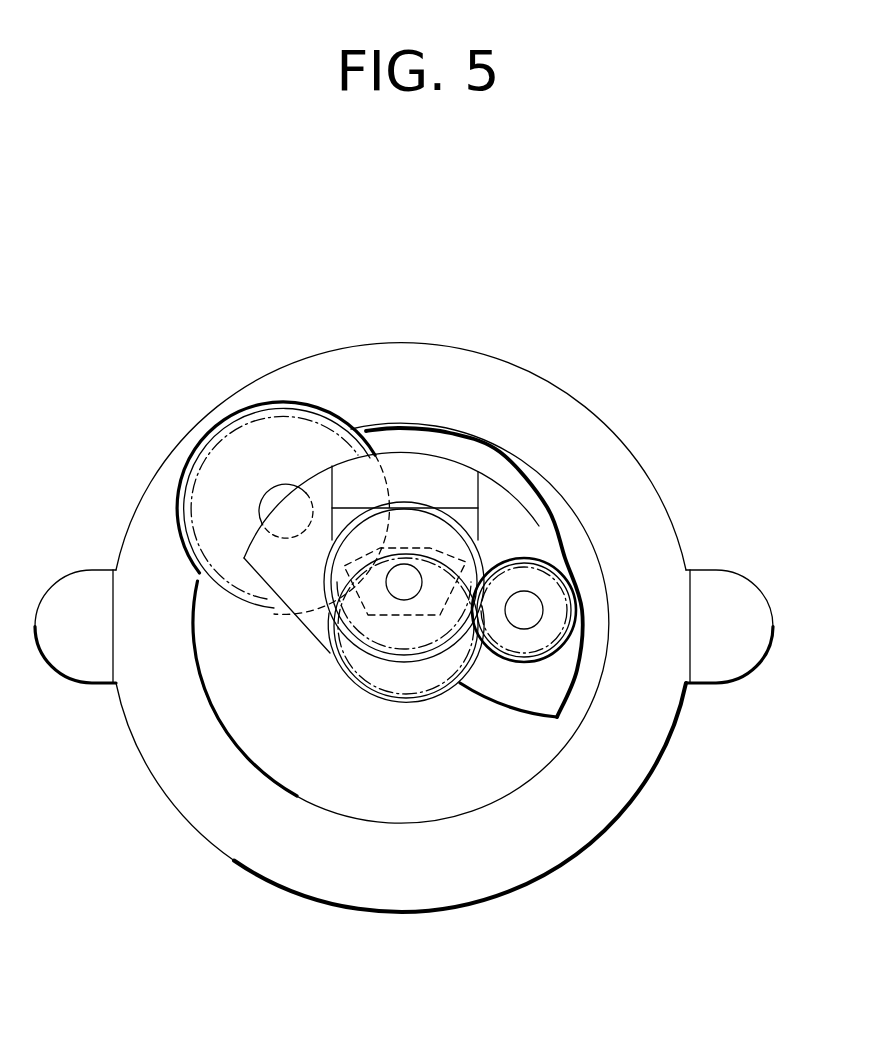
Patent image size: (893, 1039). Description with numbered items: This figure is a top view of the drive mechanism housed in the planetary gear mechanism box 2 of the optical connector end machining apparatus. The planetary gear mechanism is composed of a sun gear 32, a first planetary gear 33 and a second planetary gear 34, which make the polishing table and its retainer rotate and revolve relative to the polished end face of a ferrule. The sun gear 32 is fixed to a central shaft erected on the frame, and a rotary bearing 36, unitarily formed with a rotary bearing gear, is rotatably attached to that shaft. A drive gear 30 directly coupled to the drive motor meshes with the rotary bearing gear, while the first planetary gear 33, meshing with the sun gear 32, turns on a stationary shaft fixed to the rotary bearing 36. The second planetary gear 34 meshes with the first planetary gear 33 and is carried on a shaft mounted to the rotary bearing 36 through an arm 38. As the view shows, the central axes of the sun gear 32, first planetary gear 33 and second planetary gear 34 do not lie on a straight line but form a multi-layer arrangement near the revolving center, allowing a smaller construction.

The planetary gear mechanism box 2 is at (418, 362).
The drive gear 30 is at (230, 452).
The sun gear 32 is at (390, 683).
The first planetary gear 33 is at (558, 610).
The second planetary gear 34 is at (457, 543).
The rotary bearing 36 is at (550, 697).
The arm 38 is at (440, 473).